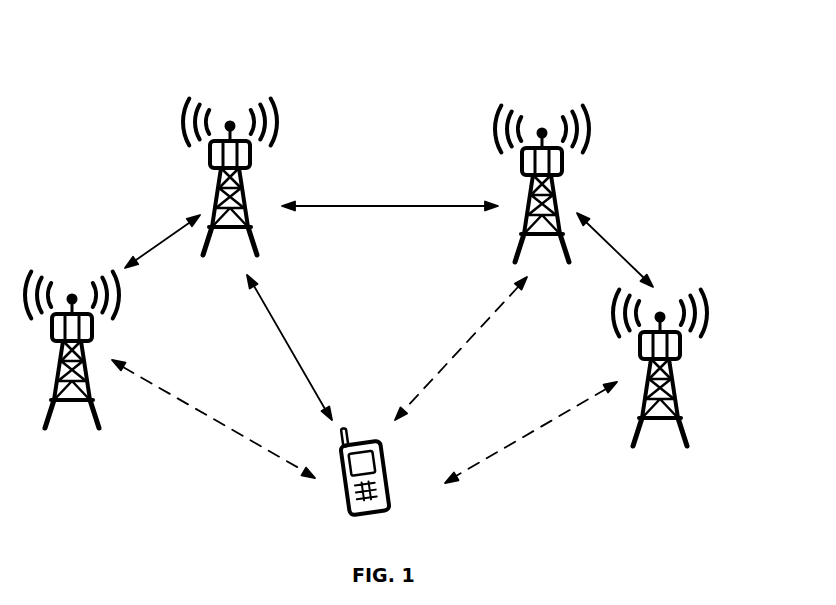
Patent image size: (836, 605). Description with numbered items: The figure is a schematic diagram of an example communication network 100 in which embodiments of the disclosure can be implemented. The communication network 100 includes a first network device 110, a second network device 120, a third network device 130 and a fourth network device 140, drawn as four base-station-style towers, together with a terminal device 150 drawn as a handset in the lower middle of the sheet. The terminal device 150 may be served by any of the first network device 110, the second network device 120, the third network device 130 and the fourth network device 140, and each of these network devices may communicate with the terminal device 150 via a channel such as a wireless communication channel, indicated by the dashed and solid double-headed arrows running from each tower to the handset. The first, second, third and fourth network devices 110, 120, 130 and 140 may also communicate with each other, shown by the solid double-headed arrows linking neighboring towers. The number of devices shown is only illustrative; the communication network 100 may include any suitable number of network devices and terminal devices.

The communication network 100 is at (148, 40).
The first network device 110 is at (258, 170).
The second network device 120 is at (580, 173).
The third network device 130 is at (100, 345).
The fourth network device 140 is at (688, 362).
The terminal device 150 is at (390, 469).